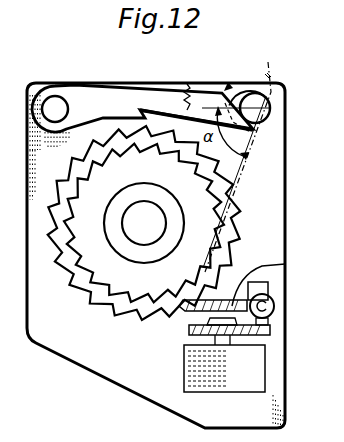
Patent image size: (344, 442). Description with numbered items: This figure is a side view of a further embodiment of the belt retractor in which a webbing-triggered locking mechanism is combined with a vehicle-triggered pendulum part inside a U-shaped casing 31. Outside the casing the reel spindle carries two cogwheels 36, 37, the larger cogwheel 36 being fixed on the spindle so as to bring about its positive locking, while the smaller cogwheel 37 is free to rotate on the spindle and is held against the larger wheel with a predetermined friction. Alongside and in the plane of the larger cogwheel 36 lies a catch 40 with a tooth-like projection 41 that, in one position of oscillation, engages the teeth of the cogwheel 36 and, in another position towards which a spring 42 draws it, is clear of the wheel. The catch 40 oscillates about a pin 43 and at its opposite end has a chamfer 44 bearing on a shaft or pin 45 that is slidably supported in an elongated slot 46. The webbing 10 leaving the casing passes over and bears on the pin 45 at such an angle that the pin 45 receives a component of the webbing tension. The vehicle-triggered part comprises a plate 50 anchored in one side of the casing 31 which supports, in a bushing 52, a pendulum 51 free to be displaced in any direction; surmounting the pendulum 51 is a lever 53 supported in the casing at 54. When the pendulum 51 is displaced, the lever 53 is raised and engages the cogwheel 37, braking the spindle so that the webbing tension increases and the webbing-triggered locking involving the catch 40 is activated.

The webbing 10 is at (270, 72).
The casing 31 is at (124, 388).
The cogwheel 36 is at (213, 172).
The cogwheel 37 is at (206, 225).
The catch 40 is at (94, 95).
The tooth-like projection 41 is at (138, 110).
The spring 42 is at (188, 84).
The pin 43 is at (57, 100).
The chamfer 44 is at (226, 90).
The pin 45 is at (272, 113).
The elongated slot 46 is at (269, 93).
The plate 50 is at (265, 332).
The pendulum 51 is at (245, 371).
The bushing 52 is at (240, 322).
The lever 53 is at (262, 266).
The support 54 is at (275, 301).